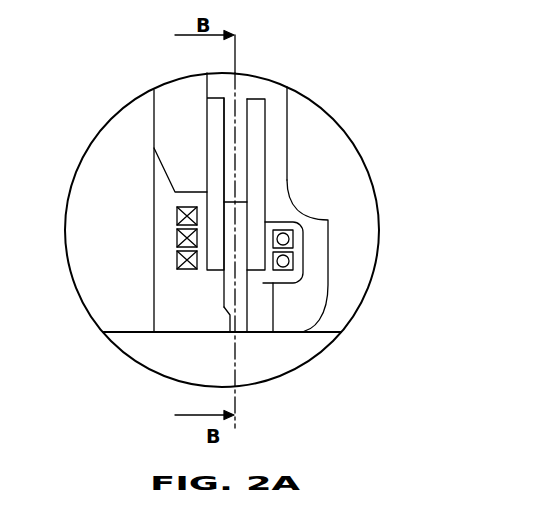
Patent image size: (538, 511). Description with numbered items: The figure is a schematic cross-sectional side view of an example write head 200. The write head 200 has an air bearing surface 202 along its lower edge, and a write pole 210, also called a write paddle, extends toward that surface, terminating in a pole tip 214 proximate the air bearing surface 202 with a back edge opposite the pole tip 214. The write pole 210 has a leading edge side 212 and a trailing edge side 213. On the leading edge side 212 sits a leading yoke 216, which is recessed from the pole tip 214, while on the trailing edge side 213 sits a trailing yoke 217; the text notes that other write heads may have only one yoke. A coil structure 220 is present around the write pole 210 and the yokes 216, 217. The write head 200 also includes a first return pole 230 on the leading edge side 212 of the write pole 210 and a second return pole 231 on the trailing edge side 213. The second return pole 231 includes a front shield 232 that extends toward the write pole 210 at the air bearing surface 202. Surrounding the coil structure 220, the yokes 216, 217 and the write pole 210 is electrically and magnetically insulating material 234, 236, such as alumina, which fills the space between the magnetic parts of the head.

The write head 200 is at (447, 93).
The first return pole 230 is at (154, 135).
The electrically and magnetically insulating material 234 is at (177, 282).
The leading yoke 216 is at (221, 74).
The trailing yoke 217 is at (267, 123).
The write pole 210 is at (258, 207).
The pole tip 214 is at (230, 333).
The leading edge side 212 is at (228, 323).
The coil structure 220 is at (168, 242).
The second return pole 231 is at (328, 220).
The electrically and magnetically insulating material 236 is at (263, 284).
The trailing edge side 213 is at (248, 304).
The air bearing surface 202 is at (130, 333).
The front shield 232 is at (287, 337).